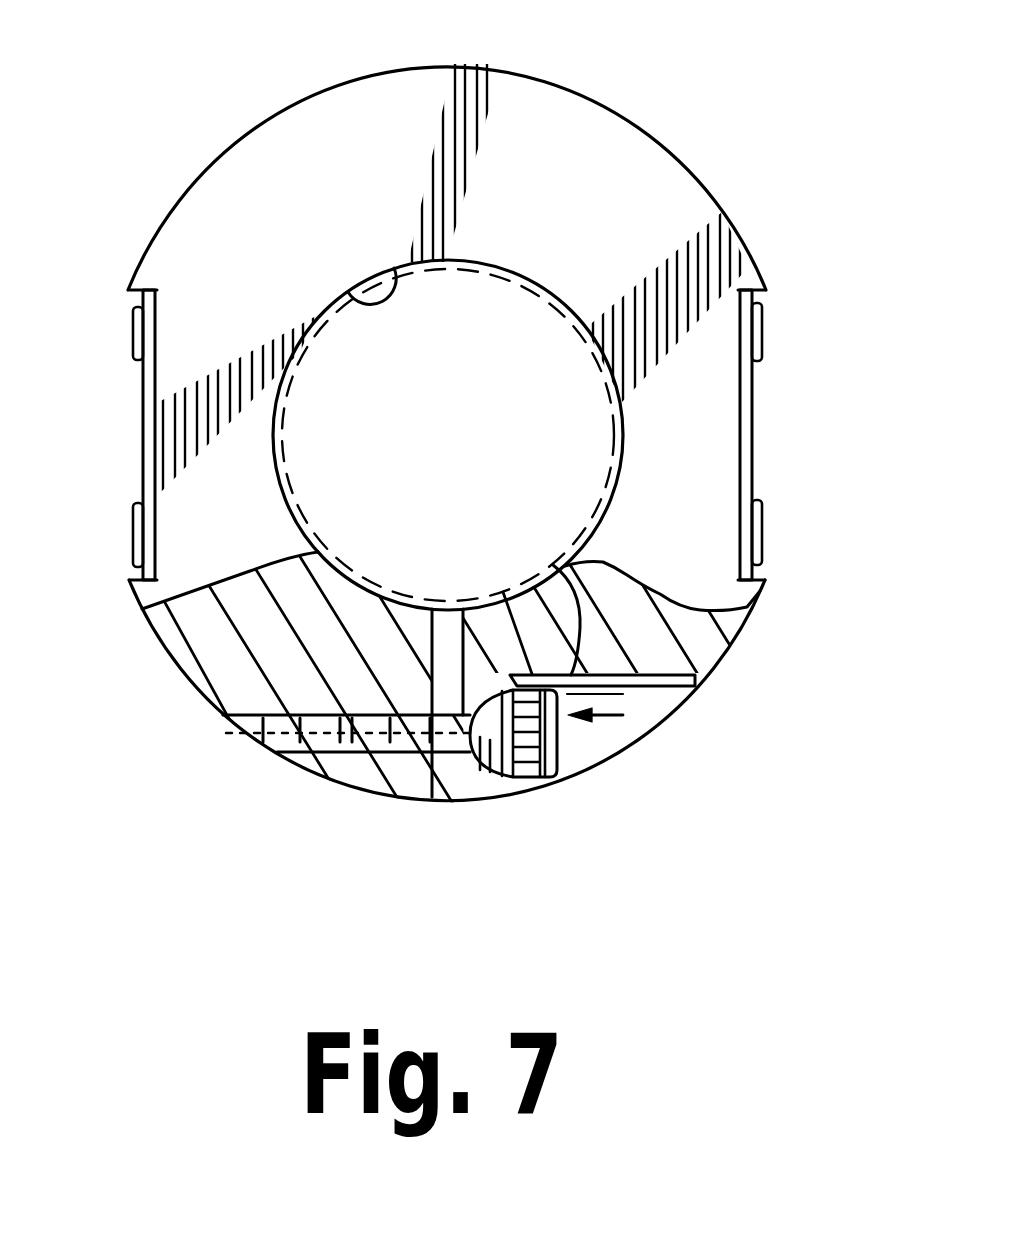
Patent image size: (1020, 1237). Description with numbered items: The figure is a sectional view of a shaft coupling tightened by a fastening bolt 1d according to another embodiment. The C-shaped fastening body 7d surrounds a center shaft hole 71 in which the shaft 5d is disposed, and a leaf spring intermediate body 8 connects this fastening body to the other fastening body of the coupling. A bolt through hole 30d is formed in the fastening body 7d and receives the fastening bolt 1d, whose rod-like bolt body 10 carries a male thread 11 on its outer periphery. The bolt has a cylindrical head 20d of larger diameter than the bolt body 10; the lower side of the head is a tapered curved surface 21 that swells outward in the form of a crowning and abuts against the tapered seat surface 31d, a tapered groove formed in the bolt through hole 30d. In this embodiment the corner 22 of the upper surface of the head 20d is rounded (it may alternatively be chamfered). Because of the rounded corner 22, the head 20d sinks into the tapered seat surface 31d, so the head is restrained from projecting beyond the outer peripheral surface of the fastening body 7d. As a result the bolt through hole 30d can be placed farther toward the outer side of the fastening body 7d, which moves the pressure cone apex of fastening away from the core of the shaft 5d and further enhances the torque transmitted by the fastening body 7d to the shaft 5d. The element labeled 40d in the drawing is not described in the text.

The fastening body 7d is at (535, 140).
The shaft 5d is at (538, 302).
The center shaft hole 71 is at (355, 300).
The leaf spring intermediate body 8 is at (142, 417).
The tapered seat surface 31d is at (540, 570).
The bolt through hole 30d is at (697, 688).
The adjusting screw 40d is at (255, 722).
The bolt body 10 is at (322, 762).
The male thread 11 is at (373, 768).
The head 20d is at (574, 795).
The tapered curved surface 21 is at (503, 785).
The corner 22 is at (547, 750).
The fastening bolt 1d is at (623, 715).